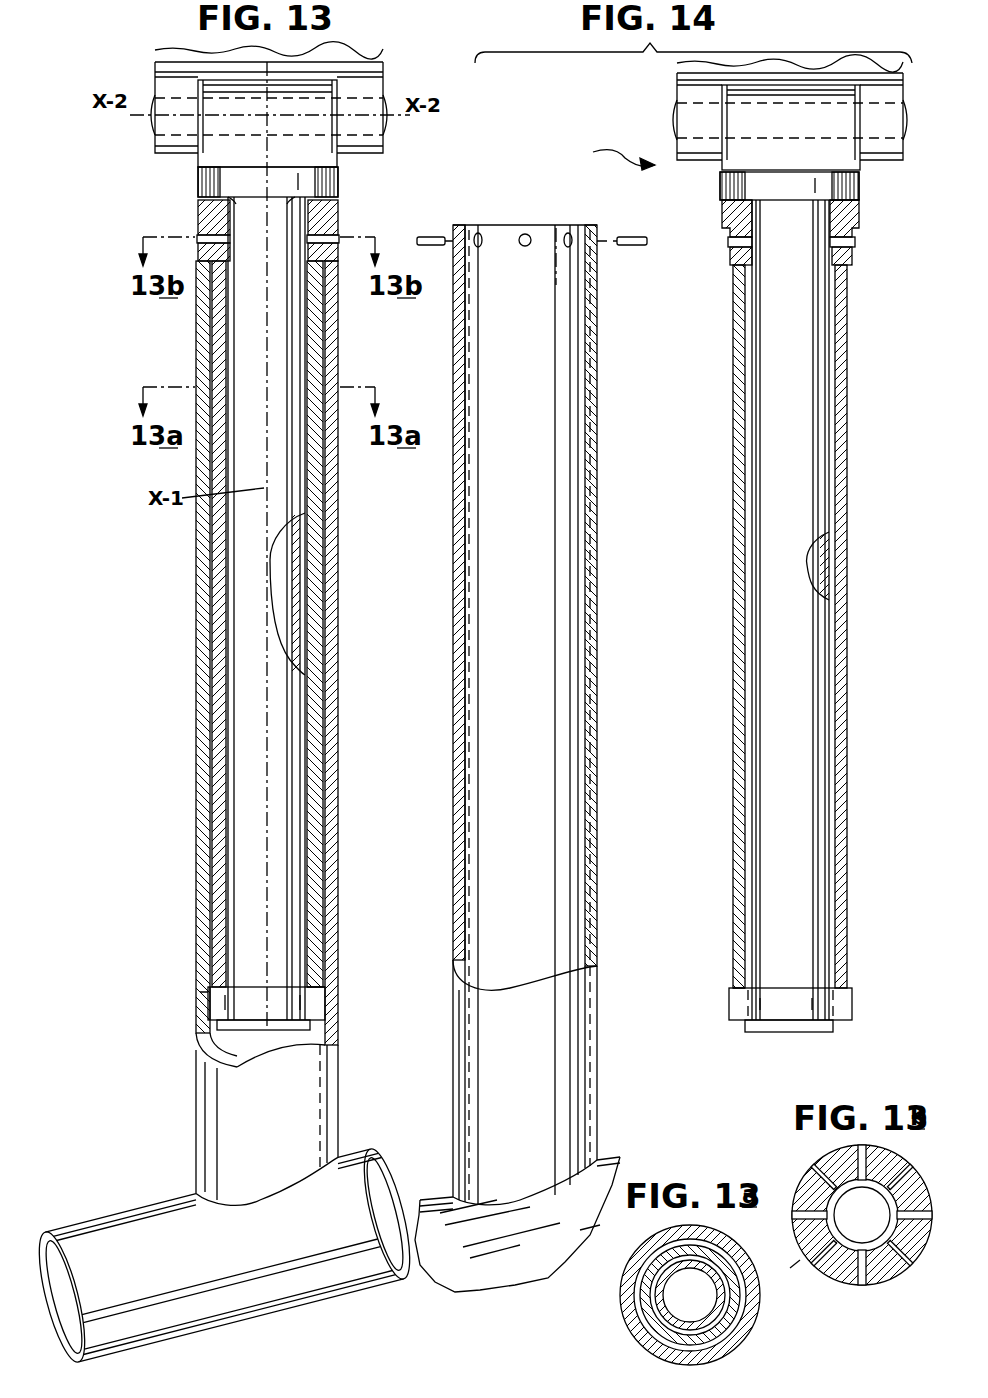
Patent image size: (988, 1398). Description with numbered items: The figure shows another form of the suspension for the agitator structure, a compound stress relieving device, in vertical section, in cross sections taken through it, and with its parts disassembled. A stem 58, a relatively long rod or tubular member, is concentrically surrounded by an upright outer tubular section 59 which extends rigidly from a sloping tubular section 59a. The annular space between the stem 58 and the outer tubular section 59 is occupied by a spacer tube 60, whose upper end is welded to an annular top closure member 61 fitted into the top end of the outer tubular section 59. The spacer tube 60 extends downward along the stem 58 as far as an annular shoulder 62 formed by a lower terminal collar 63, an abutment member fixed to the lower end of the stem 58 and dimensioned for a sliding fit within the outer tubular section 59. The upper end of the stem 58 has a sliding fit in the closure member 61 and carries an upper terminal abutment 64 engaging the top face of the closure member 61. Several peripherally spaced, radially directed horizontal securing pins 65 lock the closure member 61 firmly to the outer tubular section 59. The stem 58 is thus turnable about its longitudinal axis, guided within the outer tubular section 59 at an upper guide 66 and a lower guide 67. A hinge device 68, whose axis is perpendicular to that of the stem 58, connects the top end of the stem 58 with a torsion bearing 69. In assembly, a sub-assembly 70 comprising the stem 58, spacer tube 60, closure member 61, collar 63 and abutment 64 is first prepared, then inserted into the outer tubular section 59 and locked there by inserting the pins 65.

In FIG. 13, the stem 58 is at (272, 466).
In FIG. 14, the stem 58 is at (802, 526).
In FIG. 13a, the stem 58 is at (672, 1325).
In FIG. 13b, the stem 58 is at (845, 1250).
In FIG. 13, the outer tubular section 59 is at (332, 535).
In FIG. 14, the outer tubular section 59 is at (590, 470).
In FIG. 13a, the outer tubular section 59 is at (623, 1297).
In FIG. 13b, the outer tubular section 59 is at (885, 1157).
In FIG. 13, the sloping tubular section 59a is at (137, 1223).
In FIG. 14, the sloping tubular section 59a is at (608, 1162).
In FIG. 13, the spacer tube 60 is at (317, 497).
In FIG. 14, the spacer tube 60 is at (738, 480).
In FIG. 13a, the spacer tube 60 is at (650, 1322).
In FIG. 13, the annular top closure member 61 is at (320, 212).
In FIG. 14, the annular top closure member 61 is at (727, 214).
In FIG. 13b, the annular top closure member 61 is at (878, 1265).
In FIG. 13, the annular shoulder 62 is at (320, 983).
In FIG. 14, the annular shoulder 62 is at (735, 985).
In FIG. 13, the lower terminal collar 63 is at (303, 1002).
In FIG. 14, the lower terminal collar 63 is at (742, 1005).
In FIG. 13, the upper terminal abutment 64 is at (325, 186).
In FIG. 14, the upper terminal abutment 64 is at (740, 183).
In FIG. 13, the securing pins 65 is at (333, 239).
In FIG. 14, the securing pins 65 is at (428, 249).
In FIG. 13b, the securing pins 65 is at (818, 1177).
In FIG. 13, the upper guide 66 is at (222, 210).
In FIG. 14, the upper guide 66 is at (840, 222).
In FIG. 13b, the upper guide 66 is at (825, 1232).
In FIG. 13, the lower guide 67 is at (205, 1001).
In FIG. 13, the hinge device 68 is at (237, 122).
In FIG. 14, the hinge device 68 is at (740, 118).
In FIG. 13, the torsion bearing 69 is at (162, 62).
In FIG. 14, the torsion bearing 69 is at (695, 73).
In FIG. 14, the sub-assembly 70 is at (610, 153).